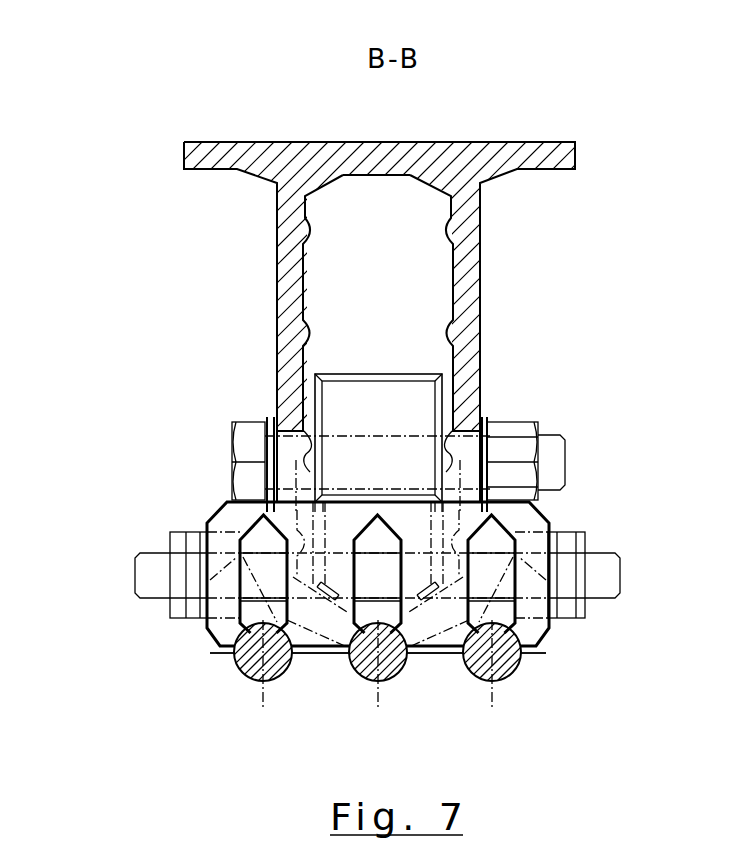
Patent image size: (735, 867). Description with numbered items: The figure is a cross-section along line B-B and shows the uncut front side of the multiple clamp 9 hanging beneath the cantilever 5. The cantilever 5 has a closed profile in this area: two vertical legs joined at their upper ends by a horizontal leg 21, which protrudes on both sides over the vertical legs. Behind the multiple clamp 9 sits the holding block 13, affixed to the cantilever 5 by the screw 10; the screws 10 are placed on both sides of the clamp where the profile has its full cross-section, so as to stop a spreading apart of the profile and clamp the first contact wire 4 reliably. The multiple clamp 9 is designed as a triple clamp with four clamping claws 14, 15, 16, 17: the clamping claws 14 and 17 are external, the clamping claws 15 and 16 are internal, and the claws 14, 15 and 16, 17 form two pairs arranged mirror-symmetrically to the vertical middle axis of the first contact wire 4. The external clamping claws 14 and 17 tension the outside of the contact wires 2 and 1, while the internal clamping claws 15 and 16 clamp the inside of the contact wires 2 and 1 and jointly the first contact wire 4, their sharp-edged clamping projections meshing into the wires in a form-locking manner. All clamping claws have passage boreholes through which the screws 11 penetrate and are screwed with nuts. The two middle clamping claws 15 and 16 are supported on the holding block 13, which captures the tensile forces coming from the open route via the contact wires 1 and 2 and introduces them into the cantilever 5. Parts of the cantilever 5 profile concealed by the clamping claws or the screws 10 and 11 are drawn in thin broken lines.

The horizontal leg 21 is at (500, 148).
The cantilever 5 is at (285, 288).
The holding block 13 is at (337, 407).
The multiple clamp 9 is at (167, 488).
The screw 10 is at (555, 466).
The screws 11 is at (613, 583).
The contact wire 2 is at (253, 670).
The first contact wire 4 is at (367, 672).
The contact wire 1 is at (483, 672).
The clamping claw 14 is at (228, 642).
The clamping claw 15 is at (313, 655).
The clamping claw 16 is at (430, 655).
The clamping claw 17 is at (530, 642).